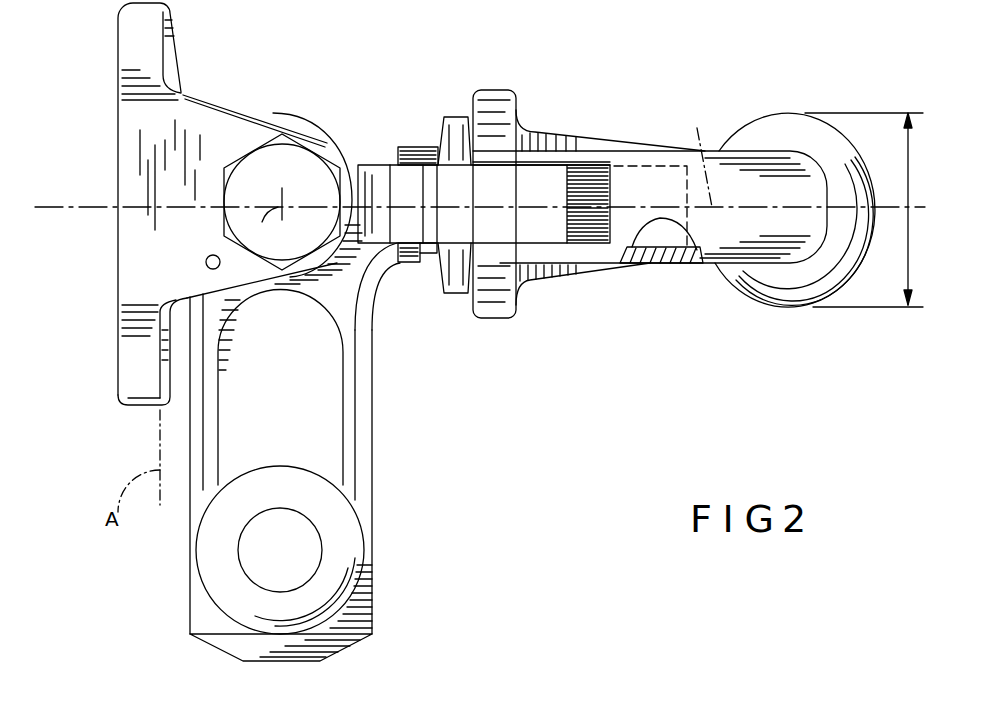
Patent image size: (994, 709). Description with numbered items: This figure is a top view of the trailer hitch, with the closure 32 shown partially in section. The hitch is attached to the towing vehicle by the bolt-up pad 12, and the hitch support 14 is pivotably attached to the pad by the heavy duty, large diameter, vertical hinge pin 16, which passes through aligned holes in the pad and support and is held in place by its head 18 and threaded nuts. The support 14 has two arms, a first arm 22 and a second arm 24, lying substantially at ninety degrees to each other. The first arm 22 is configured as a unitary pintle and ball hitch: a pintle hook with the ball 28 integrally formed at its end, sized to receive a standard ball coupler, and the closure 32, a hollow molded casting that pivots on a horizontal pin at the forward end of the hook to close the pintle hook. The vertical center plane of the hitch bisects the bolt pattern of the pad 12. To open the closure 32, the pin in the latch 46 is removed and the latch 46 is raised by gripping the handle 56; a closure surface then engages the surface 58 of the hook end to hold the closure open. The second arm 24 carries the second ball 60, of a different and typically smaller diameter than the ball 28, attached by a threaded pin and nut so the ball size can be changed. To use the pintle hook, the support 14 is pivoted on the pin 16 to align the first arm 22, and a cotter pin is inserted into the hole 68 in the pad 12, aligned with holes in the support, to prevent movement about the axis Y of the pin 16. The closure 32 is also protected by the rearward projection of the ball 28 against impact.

The bolt-up pad 12 is at (116, 89).
The hitch support 14 is at (275, 113).
The hinge pin 16 is at (315, 146).
The head 18 is at (260, 170).
The first arm 22 is at (610, 270).
The second arm 24 is at (373, 433).
The ball 28 is at (790, 307).
The closure 32 is at (685, 257).
The latch 46 is at (503, 196).
The handle 56 is at (455, 287).
The surface of hook end 58 is at (417, 232).
The second ball 60 is at (293, 547).
The hole 68 is at (219, 268).